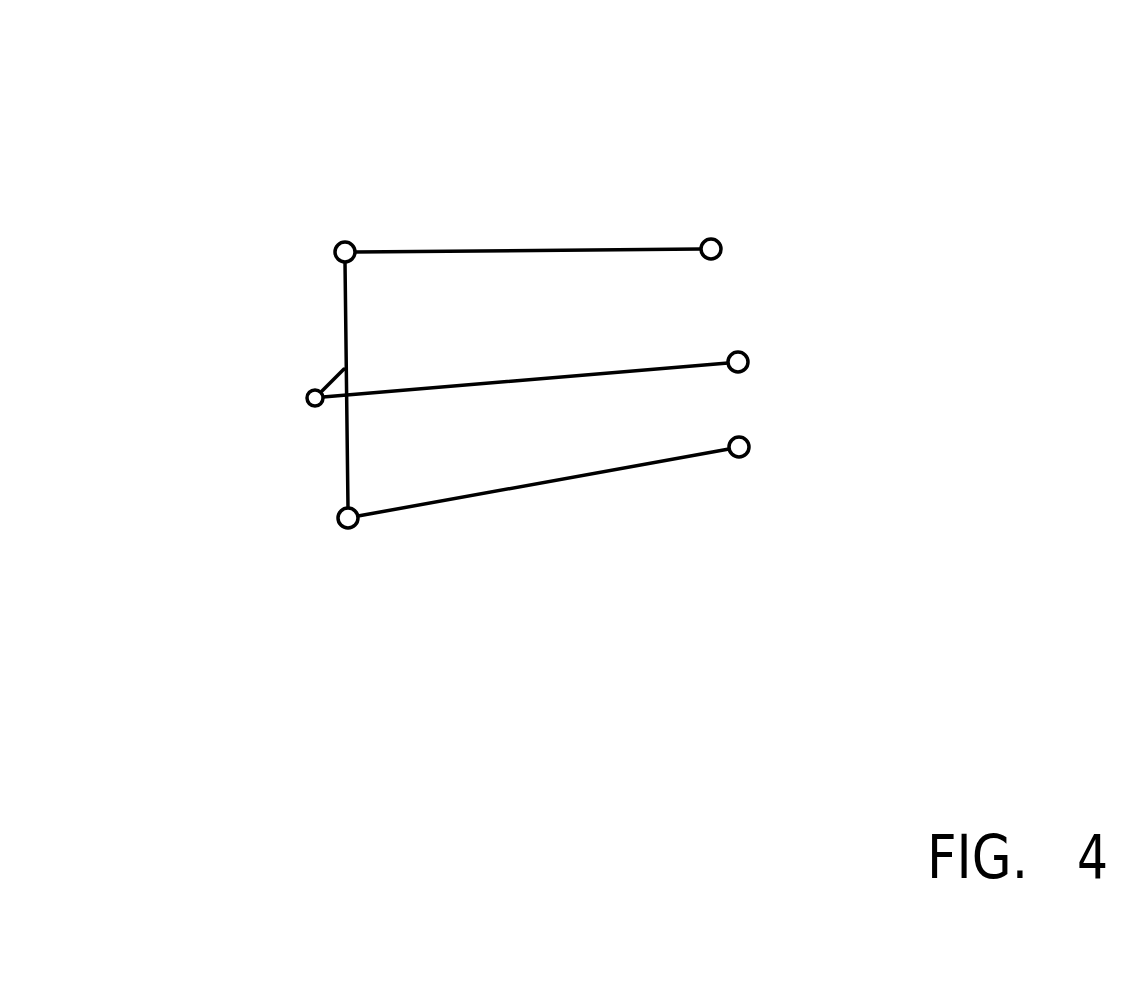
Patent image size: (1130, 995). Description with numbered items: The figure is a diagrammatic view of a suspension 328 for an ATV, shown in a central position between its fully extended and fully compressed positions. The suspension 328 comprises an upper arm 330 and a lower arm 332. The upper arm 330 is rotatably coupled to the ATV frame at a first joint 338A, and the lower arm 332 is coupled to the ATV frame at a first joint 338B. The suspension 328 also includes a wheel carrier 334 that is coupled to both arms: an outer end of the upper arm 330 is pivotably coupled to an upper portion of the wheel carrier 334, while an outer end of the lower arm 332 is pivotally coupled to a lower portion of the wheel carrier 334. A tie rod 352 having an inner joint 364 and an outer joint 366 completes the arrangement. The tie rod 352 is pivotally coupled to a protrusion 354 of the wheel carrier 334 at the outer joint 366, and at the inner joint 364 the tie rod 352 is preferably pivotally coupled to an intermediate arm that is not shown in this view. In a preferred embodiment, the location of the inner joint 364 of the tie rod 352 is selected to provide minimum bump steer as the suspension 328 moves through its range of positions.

The suspension 328 is at (737, 705).
The upper arm 330 is at (530, 251).
The lower arm 332 is at (545, 483).
The wheel carrier 334 is at (345, 467).
The first joint 338A is at (712, 239).
The first joint 338B is at (735, 457).
The tie rod 352 is at (623, 370).
The protrusion 354 is at (330, 370).
The inner joint 364 is at (748, 362).
The outer joint 366 is at (317, 407).